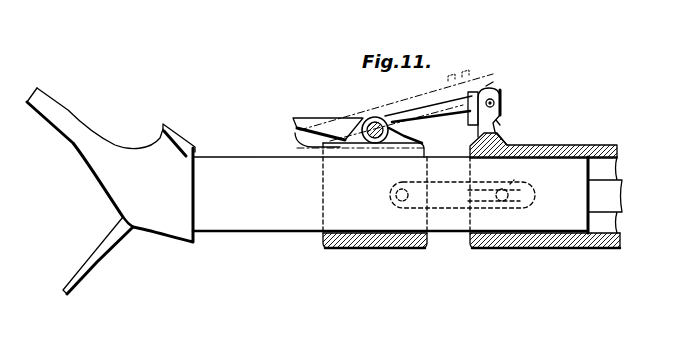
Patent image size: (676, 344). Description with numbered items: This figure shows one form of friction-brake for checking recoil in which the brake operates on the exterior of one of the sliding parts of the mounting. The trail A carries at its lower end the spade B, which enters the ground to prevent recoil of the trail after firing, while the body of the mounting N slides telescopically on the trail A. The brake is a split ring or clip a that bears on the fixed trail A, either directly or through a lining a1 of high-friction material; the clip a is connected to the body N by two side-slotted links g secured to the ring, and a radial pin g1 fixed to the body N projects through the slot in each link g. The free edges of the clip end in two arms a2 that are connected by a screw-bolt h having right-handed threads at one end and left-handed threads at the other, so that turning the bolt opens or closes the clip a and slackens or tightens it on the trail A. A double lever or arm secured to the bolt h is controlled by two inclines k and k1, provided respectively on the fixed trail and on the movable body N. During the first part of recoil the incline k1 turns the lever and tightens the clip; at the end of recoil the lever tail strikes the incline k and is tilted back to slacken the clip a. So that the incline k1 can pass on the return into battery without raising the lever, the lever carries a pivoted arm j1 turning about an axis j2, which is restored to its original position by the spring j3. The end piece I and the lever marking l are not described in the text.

The spade B is at (74, 277).
The incline k is at (178, 134).
The trail A is at (390, 188).
The side-slotted link g is at (446, 182).
The radial pin g1 is at (507, 188).
The split ring or clip a is at (343, 249).
The lining a1 is at (372, 249).
The arm a2 is at (369, 142).
The body of the mounting N is at (543, 142).
The end piece I is at (605, 195).
The screw-bolt h is at (372, 128).
The lever l is at (396, 105).
The incline k1 is at (505, 137).
The pivoted arm j1 is at (502, 122).
The axis j2 is at (496, 102).
The spring j3 is at (494, 85).